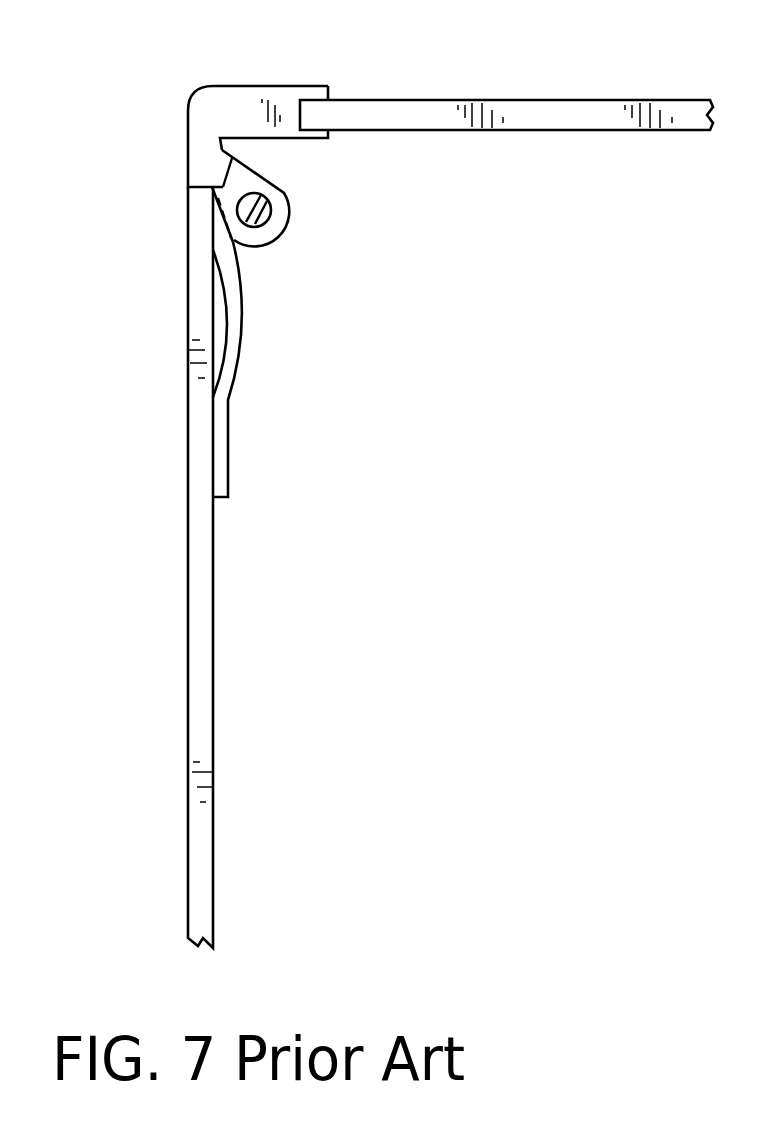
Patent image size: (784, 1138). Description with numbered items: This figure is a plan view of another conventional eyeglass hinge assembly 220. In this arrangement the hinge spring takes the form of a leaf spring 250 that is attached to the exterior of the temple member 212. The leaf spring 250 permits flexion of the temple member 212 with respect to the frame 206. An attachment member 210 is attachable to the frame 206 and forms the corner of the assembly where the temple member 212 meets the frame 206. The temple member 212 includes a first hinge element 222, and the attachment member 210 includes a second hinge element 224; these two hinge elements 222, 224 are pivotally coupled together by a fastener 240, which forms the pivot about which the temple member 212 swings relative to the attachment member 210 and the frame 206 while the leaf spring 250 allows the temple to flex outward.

The frame 206 is at (550, 103).
The attachment member 210 is at (235, 102).
The temple member 212 is at (193, 722).
The eyeglass hinge assembly 220 is at (288, 262).
The first hinge element 222 is at (228, 228).
The second hinge element 224 is at (247, 178).
The fastener 240 is at (265, 212).
The leaf spring 250 is at (232, 380).